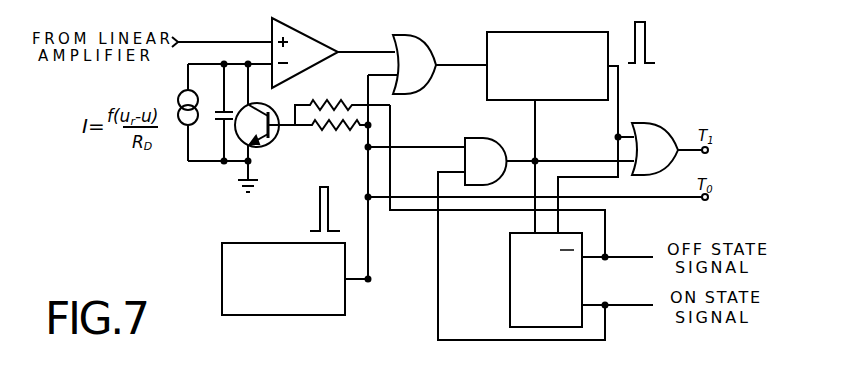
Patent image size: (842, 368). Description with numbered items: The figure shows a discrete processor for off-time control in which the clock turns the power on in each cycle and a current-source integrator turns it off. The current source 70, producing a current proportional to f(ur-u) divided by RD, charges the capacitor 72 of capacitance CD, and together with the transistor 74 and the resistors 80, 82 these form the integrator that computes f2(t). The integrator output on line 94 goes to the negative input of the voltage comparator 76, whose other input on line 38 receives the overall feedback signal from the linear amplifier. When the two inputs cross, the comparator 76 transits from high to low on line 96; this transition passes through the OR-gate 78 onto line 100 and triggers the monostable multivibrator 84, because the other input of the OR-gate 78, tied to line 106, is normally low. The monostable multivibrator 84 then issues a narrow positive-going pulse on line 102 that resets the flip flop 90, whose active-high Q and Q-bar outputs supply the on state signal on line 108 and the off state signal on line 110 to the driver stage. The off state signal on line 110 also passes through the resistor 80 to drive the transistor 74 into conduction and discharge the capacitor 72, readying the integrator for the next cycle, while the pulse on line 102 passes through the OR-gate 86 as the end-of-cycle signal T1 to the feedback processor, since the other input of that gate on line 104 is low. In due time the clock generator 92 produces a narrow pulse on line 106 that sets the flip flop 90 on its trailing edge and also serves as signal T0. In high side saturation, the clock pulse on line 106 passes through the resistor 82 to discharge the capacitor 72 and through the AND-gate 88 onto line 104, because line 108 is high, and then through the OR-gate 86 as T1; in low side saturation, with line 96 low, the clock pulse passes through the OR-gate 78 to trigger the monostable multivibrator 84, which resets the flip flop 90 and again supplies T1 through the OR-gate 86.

The line from linear amplifier 38 is at (235, 26).
The integrator output line 94 is at (227, 66).
The current source 70 is at (178, 92).
The capacitor 72 is at (218, 121).
The transistor 74 is at (262, 147).
The voltage comparator 76 is at (311, 33).
The comparator output line 96 is at (362, 51).
The OR-gate 78 is at (414, 45).
The trigger line 100 is at (476, 52).
The monostable multivibrator 84 is at (552, 31).
The monostable output line 102 is at (620, 90).
The OR-gate 86 is at (664, 136).
The resistor 80 is at (330, 98).
The resistor 82 is at (320, 131).
The AND-gate 88 is at (498, 121).
The AND-gate output line 104 is at (553, 160).
The clock generator 92 is at (222, 246).
The clock pulse line 106 is at (357, 283).
The flip flop 90 is at (586, 284).
The off state signal line 110 is at (612, 258).
The on state signal line 108 is at (620, 311).